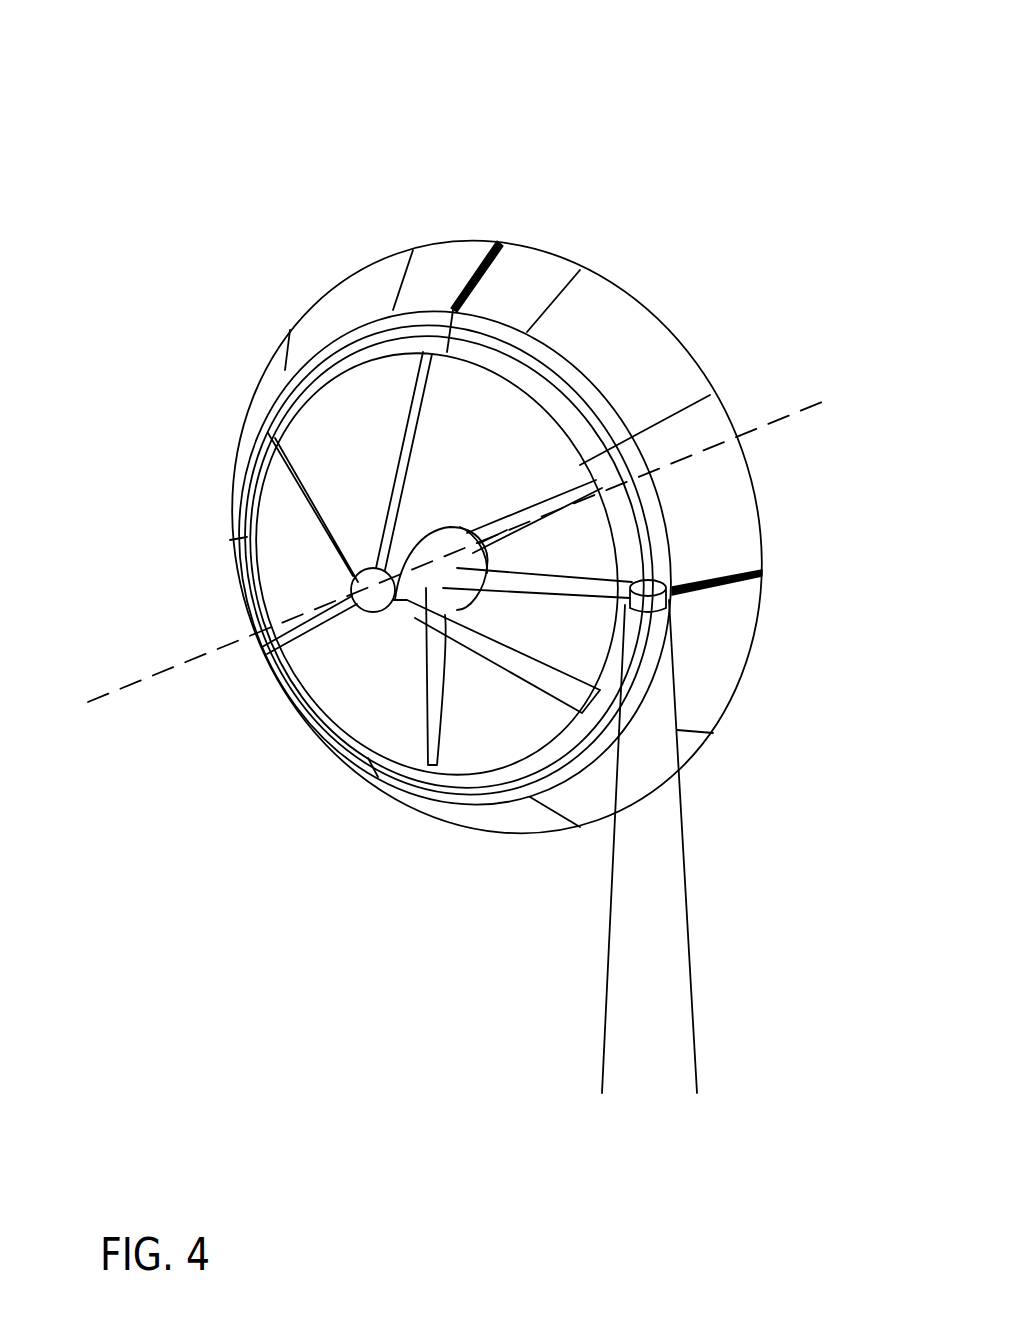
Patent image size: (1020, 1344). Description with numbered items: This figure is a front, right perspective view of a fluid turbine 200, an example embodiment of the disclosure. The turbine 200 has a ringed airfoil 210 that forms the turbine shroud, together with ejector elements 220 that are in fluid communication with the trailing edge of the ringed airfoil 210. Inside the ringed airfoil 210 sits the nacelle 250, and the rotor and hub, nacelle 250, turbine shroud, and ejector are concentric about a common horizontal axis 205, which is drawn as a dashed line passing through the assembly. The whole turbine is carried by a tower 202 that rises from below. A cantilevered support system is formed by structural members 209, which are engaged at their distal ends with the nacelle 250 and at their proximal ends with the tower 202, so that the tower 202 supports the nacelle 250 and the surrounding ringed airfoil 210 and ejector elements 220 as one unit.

The turbine 200 is at (118, 45).
The tower 202 is at (650, 958).
The common horizontal axis 205 is at (133, 683).
The structural members 209 is at (533, 590).
The ringed airfoil 210 is at (168, 494).
The ejector elements 220 is at (627, 340).
The nacelle 250 is at (423, 762).